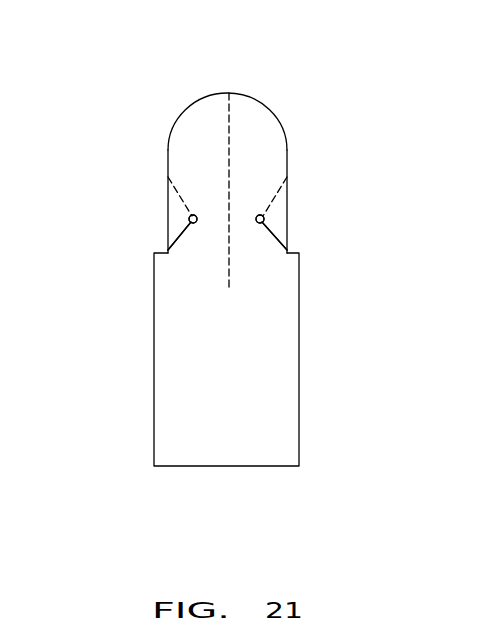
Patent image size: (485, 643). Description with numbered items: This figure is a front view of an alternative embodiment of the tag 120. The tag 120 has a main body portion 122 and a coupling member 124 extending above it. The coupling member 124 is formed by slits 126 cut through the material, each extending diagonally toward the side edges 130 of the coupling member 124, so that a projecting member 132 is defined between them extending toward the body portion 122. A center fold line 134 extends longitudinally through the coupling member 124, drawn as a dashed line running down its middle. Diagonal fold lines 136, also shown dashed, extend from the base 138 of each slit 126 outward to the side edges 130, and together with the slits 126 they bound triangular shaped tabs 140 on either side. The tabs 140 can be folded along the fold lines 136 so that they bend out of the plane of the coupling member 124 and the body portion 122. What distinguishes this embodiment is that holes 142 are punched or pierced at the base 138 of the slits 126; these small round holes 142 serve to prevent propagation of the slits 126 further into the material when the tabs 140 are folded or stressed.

The tag 120 is at (128, 319).
The main body portion 122 is at (178, 423).
The coupling member 124 is at (254, 115).
The slits 126 is at (277, 246).
The side edges 130 is at (287, 138).
The projecting member 132 is at (287, 246).
The center fold line 134 is at (230, 105).
The diagonal fold lines 136 is at (288, 198).
The base of the slits 138 is at (258, 243).
The triangular shaped tabs 140 is at (284, 224).
The holes 142 is at (284, 213).